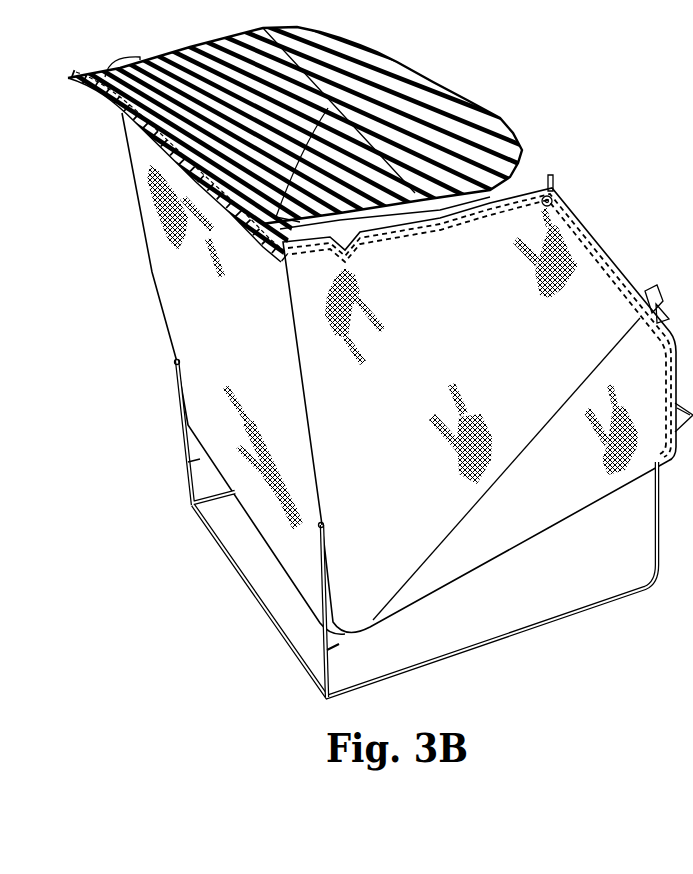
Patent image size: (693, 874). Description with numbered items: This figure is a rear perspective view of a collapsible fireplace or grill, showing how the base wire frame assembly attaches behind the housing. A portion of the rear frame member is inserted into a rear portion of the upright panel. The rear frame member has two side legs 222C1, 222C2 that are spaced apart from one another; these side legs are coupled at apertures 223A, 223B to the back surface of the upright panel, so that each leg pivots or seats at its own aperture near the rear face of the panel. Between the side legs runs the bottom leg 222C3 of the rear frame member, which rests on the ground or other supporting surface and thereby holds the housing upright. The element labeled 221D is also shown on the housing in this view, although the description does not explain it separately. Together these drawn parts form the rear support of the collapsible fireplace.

The side wall 221D is at (156, 253).
The side leg 222C1 is at (188, 445).
The side leg 222C2 is at (322, 650).
The bottom leg 222C3 is at (258, 600).
The aperture 223A is at (328, 520).
The aperture 223B is at (170, 364).